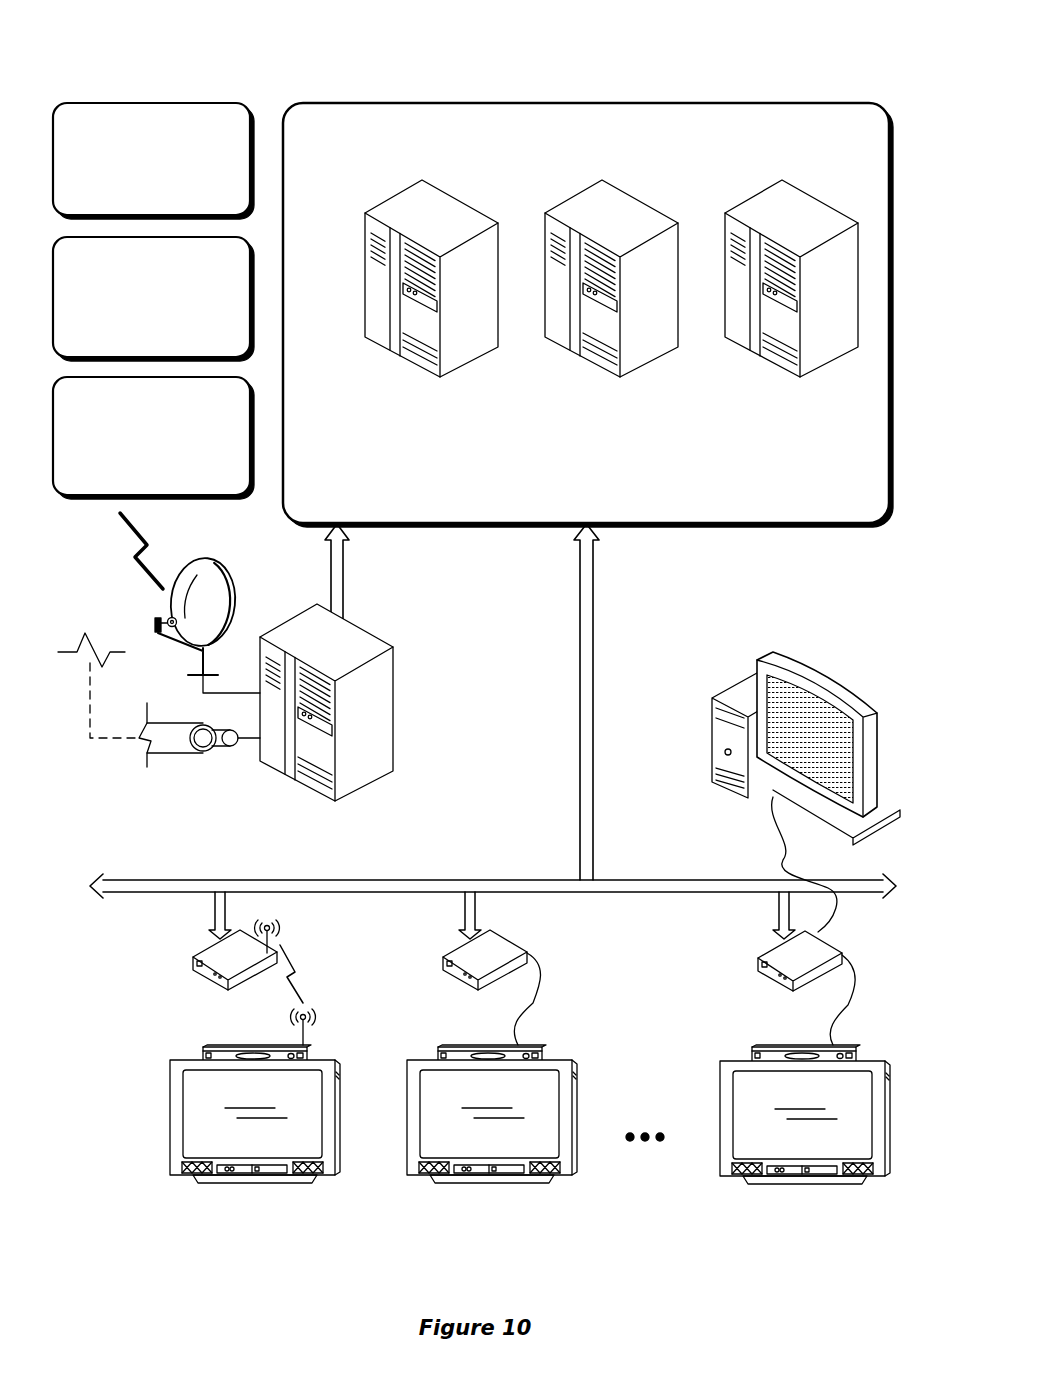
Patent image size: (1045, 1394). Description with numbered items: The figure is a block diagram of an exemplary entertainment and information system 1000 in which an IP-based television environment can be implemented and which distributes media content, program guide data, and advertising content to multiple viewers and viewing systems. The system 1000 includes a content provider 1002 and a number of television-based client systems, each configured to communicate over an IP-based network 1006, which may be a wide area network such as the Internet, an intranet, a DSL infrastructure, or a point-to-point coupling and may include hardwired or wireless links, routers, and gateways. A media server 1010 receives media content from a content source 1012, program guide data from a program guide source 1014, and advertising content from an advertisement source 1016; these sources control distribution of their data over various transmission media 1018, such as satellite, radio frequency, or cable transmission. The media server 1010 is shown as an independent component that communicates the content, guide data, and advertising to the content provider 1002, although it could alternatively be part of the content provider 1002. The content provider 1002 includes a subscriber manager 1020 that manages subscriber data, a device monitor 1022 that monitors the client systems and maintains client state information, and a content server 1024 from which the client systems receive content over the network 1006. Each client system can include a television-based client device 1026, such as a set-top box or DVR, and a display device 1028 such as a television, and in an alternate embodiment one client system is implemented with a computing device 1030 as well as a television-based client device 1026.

The entertainment and information system 1000 is at (662, 87).
The content provider 1002 is at (588, 315).
The IP-based network 1006 is at (393, 880).
The media server 1010 is at (375, 702).
The content source 1012 is at (153, 161).
The program guide source 1014 is at (153, 299).
The advertisement source 1016 is at (153, 438).
The transmission media 1018 is at (203, 775).
The subscriber manager 1020 is at (431, 331).
The device monitor 1022 is at (611, 331).
The content server 1024 is at (791, 331).
The television-based client device 1026 is at (223, 1042).
The display device 1028 is at (170, 1097).
The computing device 1030 is at (730, 687).